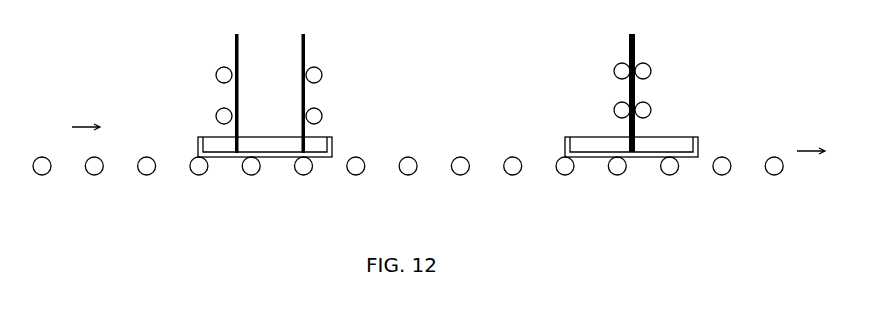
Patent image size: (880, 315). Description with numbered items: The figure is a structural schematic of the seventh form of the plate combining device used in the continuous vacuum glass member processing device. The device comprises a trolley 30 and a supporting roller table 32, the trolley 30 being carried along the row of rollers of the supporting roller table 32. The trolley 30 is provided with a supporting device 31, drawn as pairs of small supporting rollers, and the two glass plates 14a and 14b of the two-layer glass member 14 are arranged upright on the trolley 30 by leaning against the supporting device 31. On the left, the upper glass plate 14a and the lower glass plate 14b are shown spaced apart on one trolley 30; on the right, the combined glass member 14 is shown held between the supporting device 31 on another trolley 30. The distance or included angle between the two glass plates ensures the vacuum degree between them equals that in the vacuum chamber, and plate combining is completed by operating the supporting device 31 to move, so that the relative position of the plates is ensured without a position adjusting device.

The glass member 14 is at (628, 42).
The upper glass plate 14a is at (241, 59).
The lower glass plate 14b is at (308, 45).
The trolley 30 is at (330, 157).
The supporting device 31 is at (223, 116).
The supporting roller table 32 is at (143, 171).